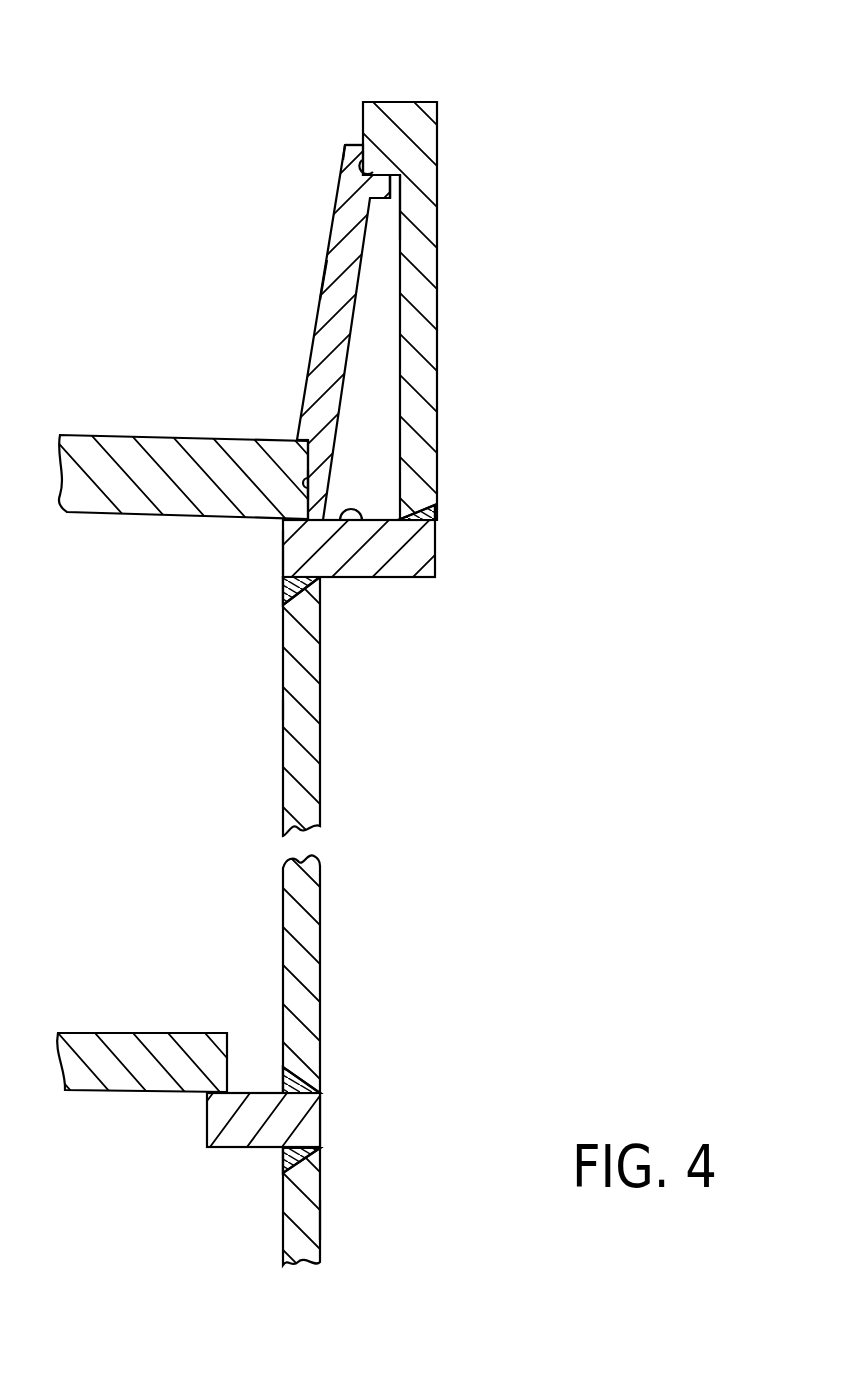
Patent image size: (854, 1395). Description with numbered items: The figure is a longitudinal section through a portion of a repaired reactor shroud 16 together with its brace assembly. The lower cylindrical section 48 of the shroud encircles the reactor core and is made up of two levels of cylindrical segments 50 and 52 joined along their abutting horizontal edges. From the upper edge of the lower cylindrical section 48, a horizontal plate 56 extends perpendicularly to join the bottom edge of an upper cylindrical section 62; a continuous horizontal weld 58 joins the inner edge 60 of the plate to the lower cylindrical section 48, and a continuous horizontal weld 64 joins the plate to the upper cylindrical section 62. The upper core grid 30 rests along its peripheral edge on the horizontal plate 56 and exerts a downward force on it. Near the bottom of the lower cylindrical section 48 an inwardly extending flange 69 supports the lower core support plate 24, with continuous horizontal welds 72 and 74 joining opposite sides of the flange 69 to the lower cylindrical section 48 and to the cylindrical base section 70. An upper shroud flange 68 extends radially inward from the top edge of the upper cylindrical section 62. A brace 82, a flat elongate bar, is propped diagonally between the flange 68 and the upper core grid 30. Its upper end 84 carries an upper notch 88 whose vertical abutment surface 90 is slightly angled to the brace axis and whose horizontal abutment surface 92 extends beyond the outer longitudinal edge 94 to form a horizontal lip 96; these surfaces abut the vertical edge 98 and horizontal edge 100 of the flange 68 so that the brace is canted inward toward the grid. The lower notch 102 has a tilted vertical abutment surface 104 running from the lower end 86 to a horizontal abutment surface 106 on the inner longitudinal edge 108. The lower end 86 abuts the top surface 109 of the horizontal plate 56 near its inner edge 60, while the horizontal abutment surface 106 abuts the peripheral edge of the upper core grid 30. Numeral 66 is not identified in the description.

The shroud 16 is at (183, 871).
The lower core support plate 24 is at (153, 1033).
The upper core grid 30 is at (110, 436).
The lower cylindrical section 48 is at (271, 710).
The cylindrical segment 50 is at (322, 948).
The cylindrical segment 52 is at (322, 748).
The horizontal plate 56 is at (422, 588).
The continuous horizontal weld 58 is at (283, 590).
The inner edge 60 is at (283, 552).
The upper cylindrical section 62 is at (437, 305).
The continuous horizontal weld 64 is at (437, 512).
The base plate 66 is at (437, 560).
The upper shroud flange 68 is at (395, 102).
The inwardly extending flange 69 is at (228, 1148).
The cylindrical base section 70 is at (322, 1222).
The continuous horizontal weld 72 is at (322, 1082).
The continuous horizontal weld 74 is at (322, 1178).
The brace 82 is at (319, 242).
The upper end 84 is at (345, 145).
The lower end 86 is at (312, 521).
The upper notch 88 is at (393, 159).
The vertical abutment surface 90 is at (343, 158).
The horizontal abutment surface 92 is at (376, 170).
The outer longitudinal edge 94 is at (352, 332).
The horizontal lip 96 is at (396, 235).
The vertical edge 98 is at (350, 145).
The horizontal edge 100 is at (385, 190).
The lower notch 102 is at (291, 420).
The vertical abutment surface 104 is at (310, 492).
The horizontal abutment surface 106 is at (297, 442).
The inner longitudinal edge 108 is at (319, 300).
The top surface 109 is at (375, 522).